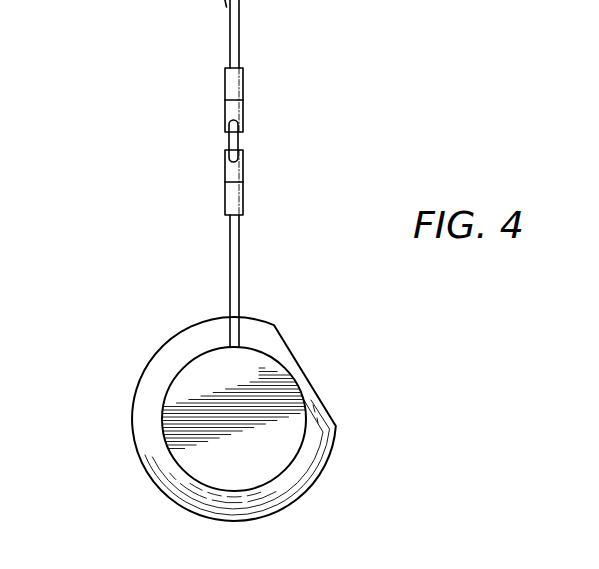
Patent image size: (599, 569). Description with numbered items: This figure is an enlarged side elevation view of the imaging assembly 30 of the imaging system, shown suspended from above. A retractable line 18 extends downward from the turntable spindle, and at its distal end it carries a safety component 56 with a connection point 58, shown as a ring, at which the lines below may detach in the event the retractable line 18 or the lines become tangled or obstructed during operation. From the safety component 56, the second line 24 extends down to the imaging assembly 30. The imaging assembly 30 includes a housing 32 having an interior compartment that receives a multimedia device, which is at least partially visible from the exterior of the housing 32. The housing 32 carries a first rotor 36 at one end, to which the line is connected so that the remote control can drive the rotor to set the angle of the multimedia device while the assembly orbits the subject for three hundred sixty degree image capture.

The retractable line 18 is at (239, 33).
The safety component 56 is at (194, 137).
The connection point 58 is at (240, 138).
The second line 24 is at (239, 271).
The imaging assembly 30 is at (254, 387).
The housing 32 is at (315, 465).
The first rotor 36 is at (208, 454).